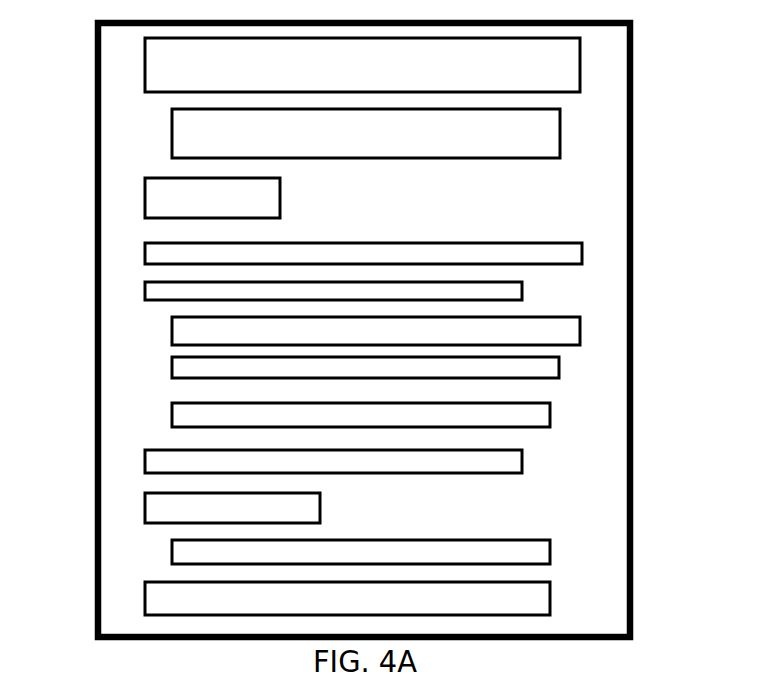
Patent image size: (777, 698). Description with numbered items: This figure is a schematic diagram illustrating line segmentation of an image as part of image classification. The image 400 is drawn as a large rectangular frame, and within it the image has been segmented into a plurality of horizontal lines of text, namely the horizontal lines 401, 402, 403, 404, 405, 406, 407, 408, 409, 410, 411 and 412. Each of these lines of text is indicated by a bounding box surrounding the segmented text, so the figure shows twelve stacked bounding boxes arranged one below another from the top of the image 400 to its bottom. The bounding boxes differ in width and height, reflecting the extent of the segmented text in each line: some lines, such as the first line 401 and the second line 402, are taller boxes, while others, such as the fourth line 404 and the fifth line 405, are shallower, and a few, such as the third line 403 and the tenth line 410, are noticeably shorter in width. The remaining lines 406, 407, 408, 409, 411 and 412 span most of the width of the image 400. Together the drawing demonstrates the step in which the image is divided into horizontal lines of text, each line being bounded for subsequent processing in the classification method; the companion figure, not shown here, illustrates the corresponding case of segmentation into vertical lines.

The image 400 is at (573, 623).
The horizontal line 401 is at (174, 75).
The horizontal line 402 is at (172, 145).
The horizontal line 403 is at (174, 197).
The horizontal line 404 is at (174, 255).
The horizontal line 405 is at (174, 292).
The horizontal line 406 is at (172, 327).
The horizontal line 407 is at (173, 372).
The horizontal line 408 is at (173, 420).
The horizontal line 409 is at (174, 465).
The horizontal line 410 is at (174, 513).
The horizontal line 411 is at (172, 548).
The horizontal line 412 is at (174, 598).